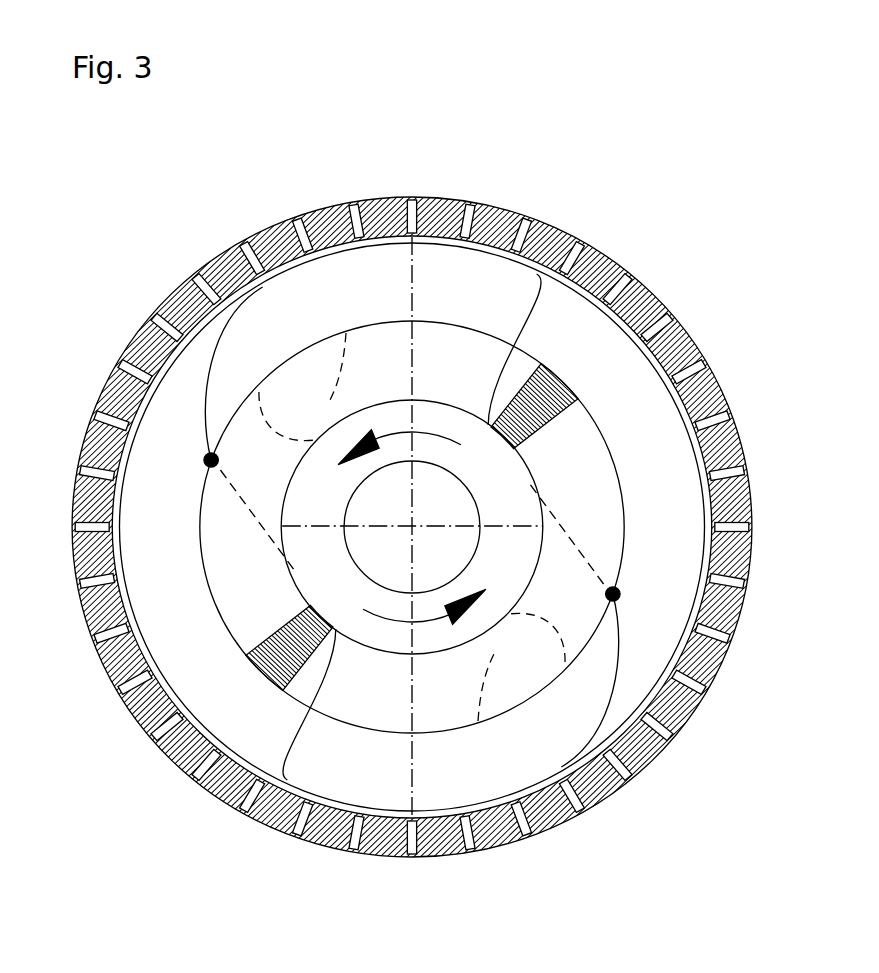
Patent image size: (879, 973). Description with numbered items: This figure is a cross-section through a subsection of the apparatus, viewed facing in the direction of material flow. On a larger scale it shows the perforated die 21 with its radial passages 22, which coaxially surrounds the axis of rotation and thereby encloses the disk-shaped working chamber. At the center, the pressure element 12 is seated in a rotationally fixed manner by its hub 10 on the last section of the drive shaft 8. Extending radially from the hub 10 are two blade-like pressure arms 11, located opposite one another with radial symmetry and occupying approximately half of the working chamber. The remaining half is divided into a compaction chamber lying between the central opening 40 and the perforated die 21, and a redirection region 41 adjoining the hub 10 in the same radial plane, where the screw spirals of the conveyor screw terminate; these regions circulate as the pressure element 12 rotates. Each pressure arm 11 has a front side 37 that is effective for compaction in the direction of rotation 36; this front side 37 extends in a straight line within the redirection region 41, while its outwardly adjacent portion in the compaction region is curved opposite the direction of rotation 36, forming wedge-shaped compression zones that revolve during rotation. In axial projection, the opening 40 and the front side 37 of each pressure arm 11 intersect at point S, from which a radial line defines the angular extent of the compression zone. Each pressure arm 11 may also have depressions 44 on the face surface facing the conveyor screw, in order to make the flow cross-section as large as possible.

The drive shaft 8 is at (445, 515).
The hub 10 is at (411, 527).
The pressure arms 11 is at (503, 266).
The pressure element 12 is at (337, 242).
The perforated die 21 is at (108, 384).
The radial passages 22 is at (243, 242).
The direction of rotation 36 is at (440, 430).
The front side 37 is at (102, 412).
The central opening 40 is at (520, 342).
The redirection region 41 is at (327, 637).
The depressions 44 is at (311, 380).
The point S is at (205, 462).